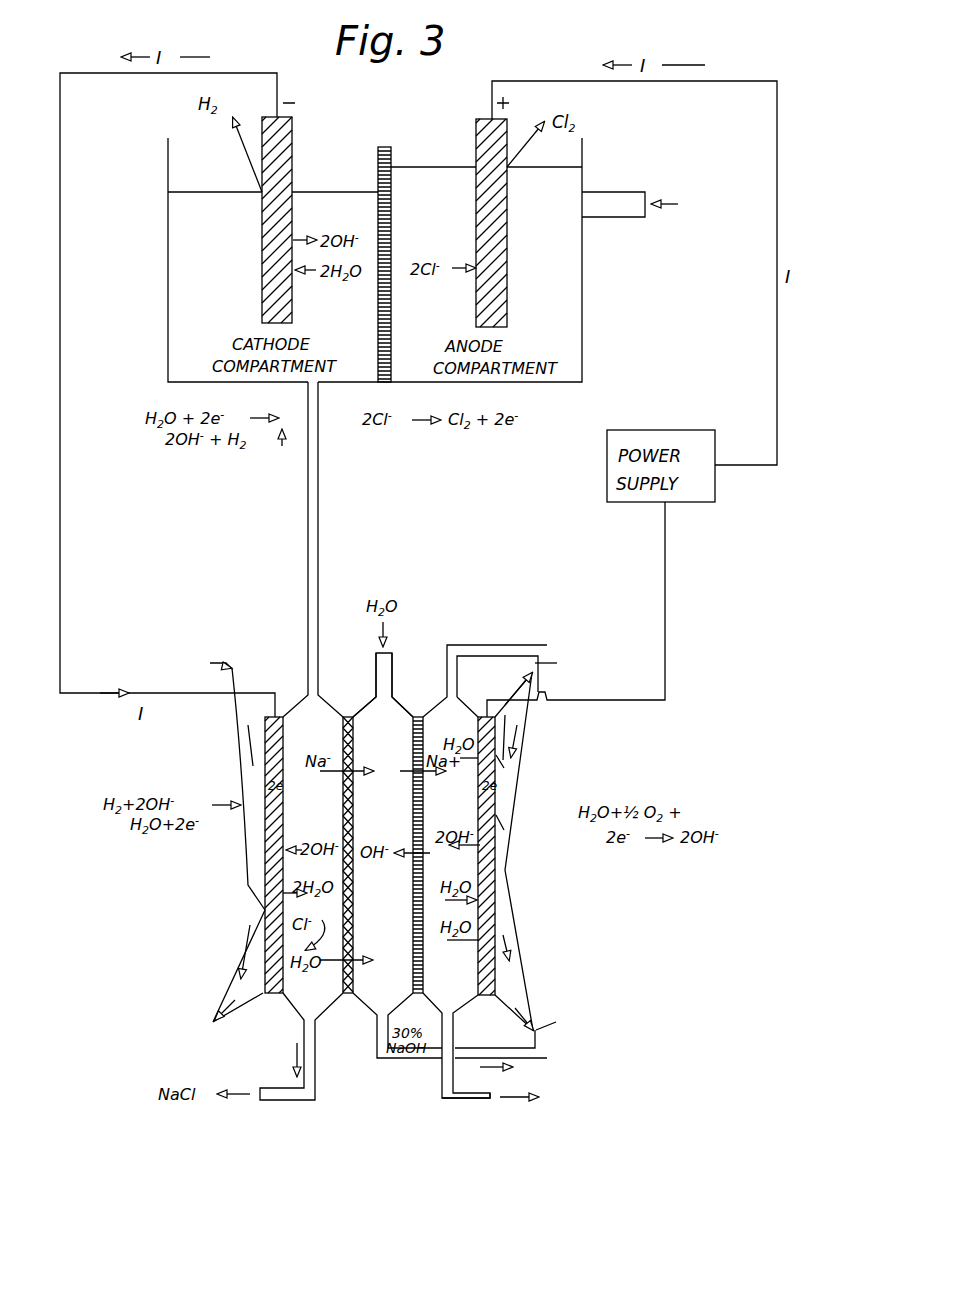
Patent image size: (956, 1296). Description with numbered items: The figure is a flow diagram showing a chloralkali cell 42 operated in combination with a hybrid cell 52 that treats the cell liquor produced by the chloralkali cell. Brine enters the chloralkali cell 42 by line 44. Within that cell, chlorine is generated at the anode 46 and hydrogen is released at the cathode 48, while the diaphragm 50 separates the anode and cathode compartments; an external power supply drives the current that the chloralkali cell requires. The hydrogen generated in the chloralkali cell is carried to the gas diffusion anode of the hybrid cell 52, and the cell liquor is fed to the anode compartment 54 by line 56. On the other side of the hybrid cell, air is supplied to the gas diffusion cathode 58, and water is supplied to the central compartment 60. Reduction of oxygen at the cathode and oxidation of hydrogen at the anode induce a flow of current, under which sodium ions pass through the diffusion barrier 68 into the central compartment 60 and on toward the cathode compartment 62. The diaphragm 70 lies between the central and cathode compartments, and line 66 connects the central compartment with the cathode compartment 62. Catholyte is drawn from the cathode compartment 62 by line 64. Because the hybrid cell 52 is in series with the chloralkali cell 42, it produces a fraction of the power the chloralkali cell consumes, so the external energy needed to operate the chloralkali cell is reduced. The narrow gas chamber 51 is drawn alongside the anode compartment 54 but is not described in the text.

The chloralkali cell 42 is at (588, 325).
The brine line 44 is at (645, 180).
The anode 46 is at (498, 284).
The cathode 48 is at (286, 298).
The diaphragm 50 is at (392, 330).
The hydrogen gas chamber 51 is at (252, 910).
The hybrid cell 52 is at (612, 925).
The anode compartment 54 is at (298, 992).
The cell liquor line 56 is at (322, 548).
The gas diffusion cathode 58 is at (484, 918).
The central compartment 60 is at (361, 994).
The cathode compartment 62 is at (470, 1030).
The catholyte line 64 is at (456, 1102).
The connecting line 66 is at (548, 975).
The diffusion barrier 68 is at (353, 900).
The diaphragm 70 is at (413, 920).